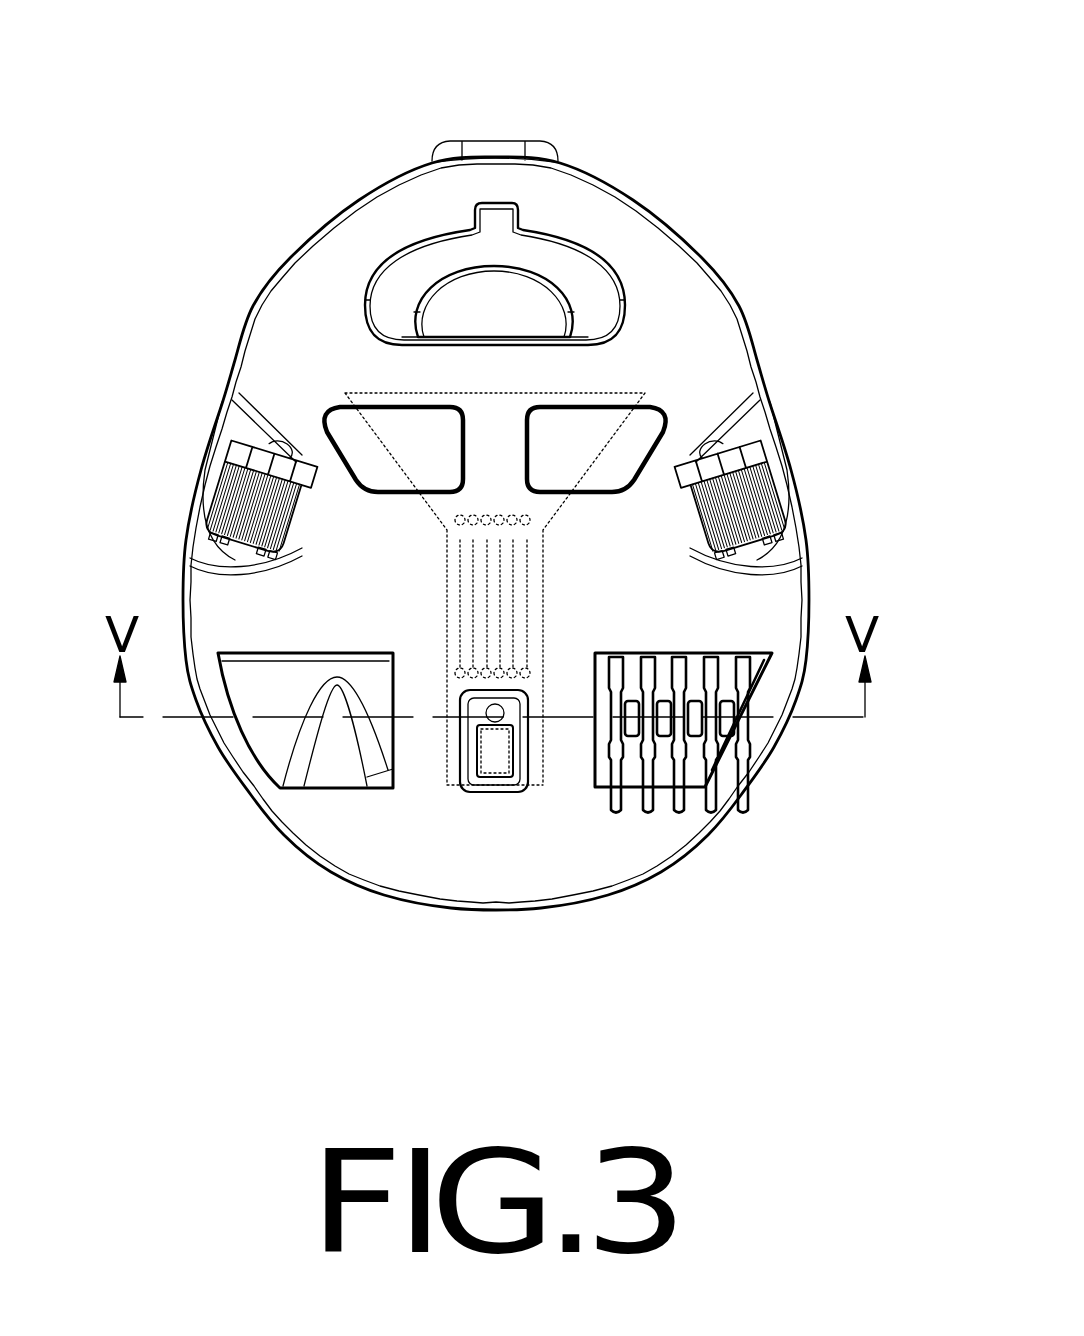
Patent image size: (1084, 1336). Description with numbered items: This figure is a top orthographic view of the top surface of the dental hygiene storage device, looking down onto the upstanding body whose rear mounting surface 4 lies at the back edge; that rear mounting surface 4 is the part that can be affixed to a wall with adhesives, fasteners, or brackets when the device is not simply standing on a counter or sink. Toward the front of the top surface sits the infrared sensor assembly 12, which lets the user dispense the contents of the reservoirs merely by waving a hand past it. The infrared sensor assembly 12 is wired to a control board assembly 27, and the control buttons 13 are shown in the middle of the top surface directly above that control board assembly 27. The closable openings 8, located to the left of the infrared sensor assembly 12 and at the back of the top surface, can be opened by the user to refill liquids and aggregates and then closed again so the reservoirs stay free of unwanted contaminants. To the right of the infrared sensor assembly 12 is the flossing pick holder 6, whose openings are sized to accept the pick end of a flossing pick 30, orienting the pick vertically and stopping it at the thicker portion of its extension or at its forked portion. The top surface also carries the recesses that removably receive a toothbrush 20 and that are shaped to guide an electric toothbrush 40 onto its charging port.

The rear mounting surface 4 is at (493, 138).
The closable openings 8 is at (567, 267).
The control board assembly 27 is at (393, 395).
The control buttons 13 is at (330, 432).
The electric toothbrush 40 is at (245, 507).
The toothbrush 20 is at (747, 507).
The flossing pick holder 6 is at (740, 720).
The flossing pick 30 is at (730, 803).
The infrared sensor assembly 12 is at (497, 757).